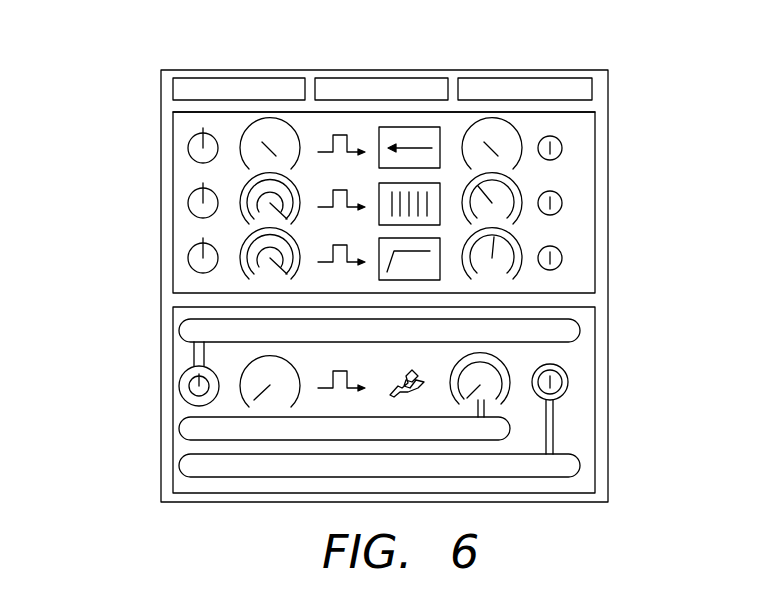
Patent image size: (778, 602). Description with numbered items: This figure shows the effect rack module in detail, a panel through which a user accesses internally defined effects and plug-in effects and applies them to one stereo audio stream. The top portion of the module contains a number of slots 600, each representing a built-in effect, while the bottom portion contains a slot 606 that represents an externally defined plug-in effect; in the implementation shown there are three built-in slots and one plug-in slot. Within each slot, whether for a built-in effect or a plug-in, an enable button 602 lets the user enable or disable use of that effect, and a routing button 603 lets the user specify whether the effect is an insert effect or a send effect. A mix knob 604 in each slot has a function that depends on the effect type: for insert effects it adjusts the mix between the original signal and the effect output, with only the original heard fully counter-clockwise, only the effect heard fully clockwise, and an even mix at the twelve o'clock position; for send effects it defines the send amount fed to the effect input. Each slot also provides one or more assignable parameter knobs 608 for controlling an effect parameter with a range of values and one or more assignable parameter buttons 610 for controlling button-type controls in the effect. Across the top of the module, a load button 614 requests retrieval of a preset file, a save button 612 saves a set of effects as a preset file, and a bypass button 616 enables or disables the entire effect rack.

The slots 600 is at (143, 122).
The enable button 602 is at (192, 137).
The routing button 603 is at (342, 263).
The mix knob 604 is at (240, 143).
The slot 606 is at (595, 363).
The assignable parameter knobs 608 is at (515, 130).
The assignable parameter buttons 610 is at (562, 194).
The save button 612 is at (338, 78).
The load button 614 is at (218, 78).
The bypass button 616 is at (485, 78).